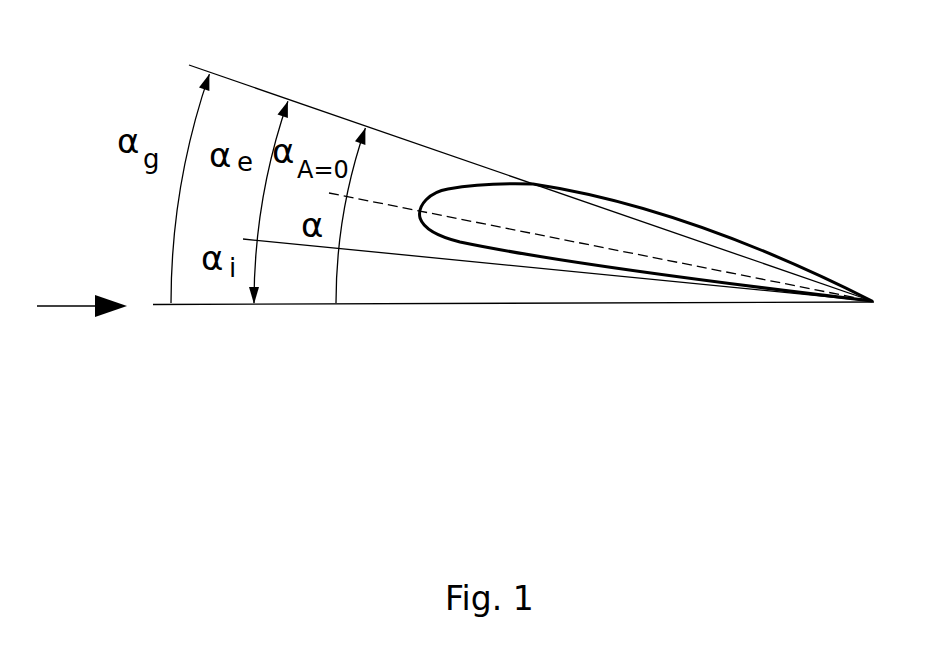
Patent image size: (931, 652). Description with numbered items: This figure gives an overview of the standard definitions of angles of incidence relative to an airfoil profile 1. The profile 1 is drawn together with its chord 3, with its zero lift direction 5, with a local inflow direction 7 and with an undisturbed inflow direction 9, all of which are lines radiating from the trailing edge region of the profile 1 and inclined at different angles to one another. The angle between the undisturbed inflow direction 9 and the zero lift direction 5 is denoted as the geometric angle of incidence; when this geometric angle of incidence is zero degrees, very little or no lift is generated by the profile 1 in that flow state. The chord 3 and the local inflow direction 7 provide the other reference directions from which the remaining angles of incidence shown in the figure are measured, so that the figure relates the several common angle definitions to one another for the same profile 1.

The profile 1 is at (660, 150).
The chord 3 is at (477, 222).
The zero lift direction 5 is at (417, 143).
The local inflow direction 7 is at (365, 255).
The undisturbed inflow direction 9 is at (278, 305).